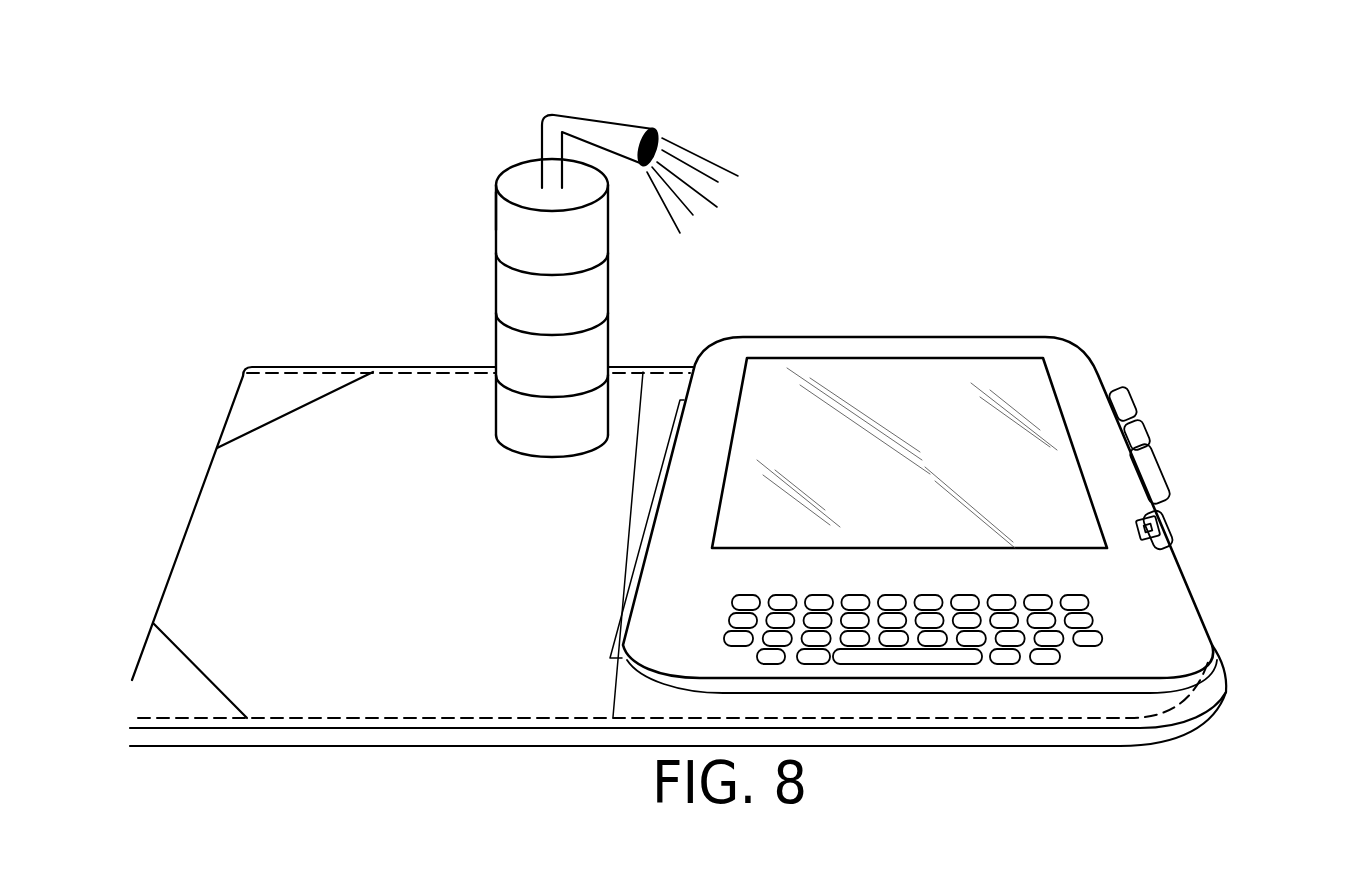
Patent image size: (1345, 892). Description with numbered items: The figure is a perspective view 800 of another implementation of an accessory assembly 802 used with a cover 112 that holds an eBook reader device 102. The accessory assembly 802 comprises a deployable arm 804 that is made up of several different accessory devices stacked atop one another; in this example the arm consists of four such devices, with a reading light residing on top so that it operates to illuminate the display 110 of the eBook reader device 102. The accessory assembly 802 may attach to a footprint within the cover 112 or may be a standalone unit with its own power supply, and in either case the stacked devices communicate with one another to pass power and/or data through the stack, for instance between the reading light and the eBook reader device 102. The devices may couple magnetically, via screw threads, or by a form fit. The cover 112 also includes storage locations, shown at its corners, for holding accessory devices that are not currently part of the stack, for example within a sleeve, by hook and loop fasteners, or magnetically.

The perspective view 800 is at (1236, 78).
The accessory assembly 802 is at (335, 181).
The deployable arm 804 is at (419, 259).
The cover 112 is at (213, 772).
The eBook reader device 102 is at (1163, 437).
The display 110 is at (917, 400).